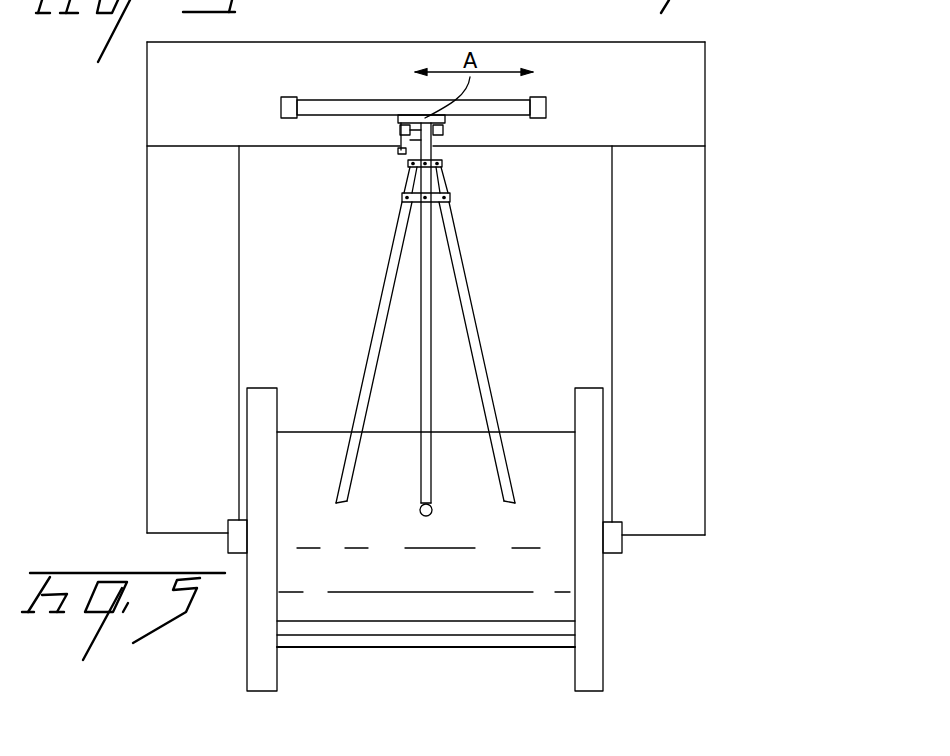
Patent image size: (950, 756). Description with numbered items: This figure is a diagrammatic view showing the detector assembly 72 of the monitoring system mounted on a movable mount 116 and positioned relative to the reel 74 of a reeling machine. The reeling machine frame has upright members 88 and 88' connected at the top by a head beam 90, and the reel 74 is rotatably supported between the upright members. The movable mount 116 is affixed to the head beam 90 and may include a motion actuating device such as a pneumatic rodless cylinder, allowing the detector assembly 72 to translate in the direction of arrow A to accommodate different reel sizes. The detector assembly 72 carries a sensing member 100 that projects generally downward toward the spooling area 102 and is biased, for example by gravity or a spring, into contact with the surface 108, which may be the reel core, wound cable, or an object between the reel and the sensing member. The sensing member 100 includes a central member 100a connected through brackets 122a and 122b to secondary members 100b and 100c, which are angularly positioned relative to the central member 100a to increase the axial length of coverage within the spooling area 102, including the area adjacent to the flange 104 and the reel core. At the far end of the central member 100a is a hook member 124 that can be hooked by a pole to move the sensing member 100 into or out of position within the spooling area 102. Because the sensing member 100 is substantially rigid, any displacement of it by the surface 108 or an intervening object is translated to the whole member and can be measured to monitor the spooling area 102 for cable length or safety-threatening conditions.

The detector assembly 72 is at (543, 409).
The reel 74 is at (620, 647).
The upright member 88 is at (136, 297).
The upright member 88' is at (709, 297).
The head beam 90 is at (697, 94).
The sensing member 100 is at (433, 409).
The central member 100a is at (430, 323).
The secondary member 100b is at (380, 287).
The secondary member 100c is at (492, 380).
The spooling area 102 is at (325, 405).
The flange 104 is at (263, 672).
The surface 108 is at (545, 463).
The movable mount 116 is at (365, 103).
The bracket 122a is at (440, 164).
The bracket 122b is at (452, 200).
The hook member 124 is at (432, 510).